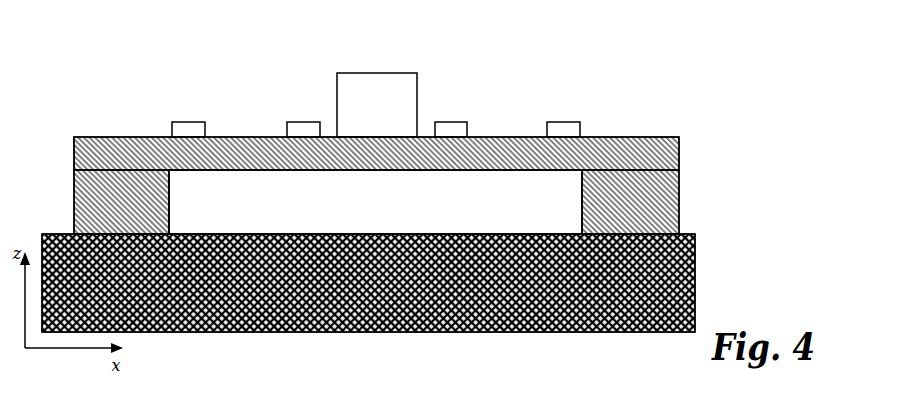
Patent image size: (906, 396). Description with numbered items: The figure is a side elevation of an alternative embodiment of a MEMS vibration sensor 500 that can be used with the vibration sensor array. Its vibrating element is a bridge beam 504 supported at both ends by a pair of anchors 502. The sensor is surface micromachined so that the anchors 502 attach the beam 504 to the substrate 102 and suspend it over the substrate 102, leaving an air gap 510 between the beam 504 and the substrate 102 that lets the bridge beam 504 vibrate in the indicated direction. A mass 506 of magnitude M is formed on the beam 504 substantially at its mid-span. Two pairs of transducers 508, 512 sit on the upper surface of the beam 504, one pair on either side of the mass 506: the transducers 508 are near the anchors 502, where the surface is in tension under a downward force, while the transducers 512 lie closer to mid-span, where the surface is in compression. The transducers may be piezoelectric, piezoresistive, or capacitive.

The substrate 102 is at (368, 283).
The MEMS vibration sensor 500 is at (426, 152).
The anchors 502 is at (376, 202).
The bridge beam 504 is at (376, 153).
The mass 506 is at (377, 105).
The transducers 508 is at (177, 119).
The air gap 510 is at (375, 202).
The transducers 512 is at (301, 119).